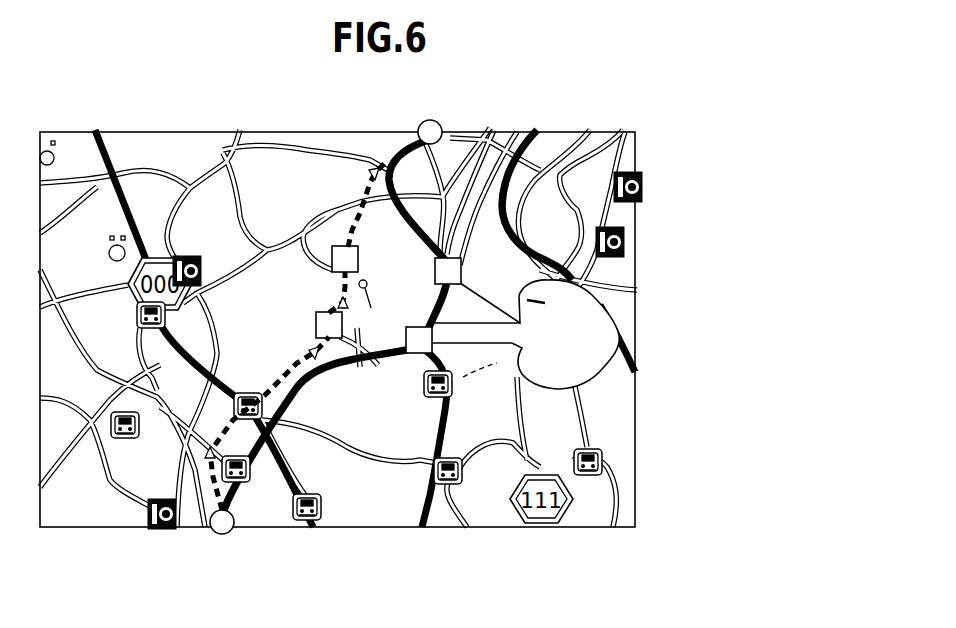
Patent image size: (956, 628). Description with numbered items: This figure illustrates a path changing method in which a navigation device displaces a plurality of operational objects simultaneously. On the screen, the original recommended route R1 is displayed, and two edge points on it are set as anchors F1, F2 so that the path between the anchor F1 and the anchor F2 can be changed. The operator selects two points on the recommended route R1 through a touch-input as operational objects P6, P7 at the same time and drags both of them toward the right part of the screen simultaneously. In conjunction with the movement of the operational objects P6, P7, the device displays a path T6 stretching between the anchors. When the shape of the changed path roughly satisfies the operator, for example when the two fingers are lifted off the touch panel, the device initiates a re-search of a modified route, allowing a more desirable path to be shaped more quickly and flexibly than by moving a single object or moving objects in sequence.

The recommended route R1 is at (358, 195).
The anchor F1 is at (440, 122).
The anchor F2 is at (220, 533).
The path T6 is at (312, 378).
The operational object P6 is at (345, 259).
The operational object P7 is at (329, 325).